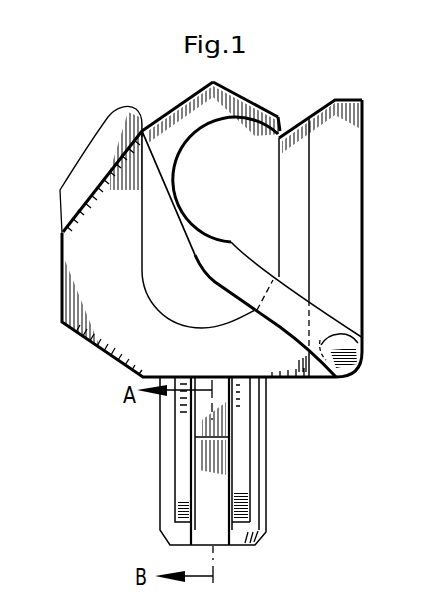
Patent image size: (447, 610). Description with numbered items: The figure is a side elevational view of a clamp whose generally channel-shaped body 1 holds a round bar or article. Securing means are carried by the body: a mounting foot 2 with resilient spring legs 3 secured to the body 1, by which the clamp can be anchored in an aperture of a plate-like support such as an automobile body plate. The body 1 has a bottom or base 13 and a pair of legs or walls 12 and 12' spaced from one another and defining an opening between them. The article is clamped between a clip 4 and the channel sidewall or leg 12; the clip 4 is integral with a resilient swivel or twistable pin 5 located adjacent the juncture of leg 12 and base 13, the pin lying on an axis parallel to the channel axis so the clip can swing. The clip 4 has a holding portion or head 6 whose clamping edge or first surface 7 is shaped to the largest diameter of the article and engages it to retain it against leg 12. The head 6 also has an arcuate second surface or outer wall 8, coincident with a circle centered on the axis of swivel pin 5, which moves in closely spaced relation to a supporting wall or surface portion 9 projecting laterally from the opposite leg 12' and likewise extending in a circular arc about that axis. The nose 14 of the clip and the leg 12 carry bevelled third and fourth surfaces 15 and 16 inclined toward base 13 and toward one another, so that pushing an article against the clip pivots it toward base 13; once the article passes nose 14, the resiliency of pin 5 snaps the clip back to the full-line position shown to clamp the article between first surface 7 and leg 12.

The channel-shaped body 1 is at (320, 410).
The mounting foot 2 is at (293, 495).
The resilient spring legs 3 is at (205, 465).
The clip 4 is at (300, 298).
The swivel pin 5 is at (357, 343).
The head 6 is at (210, 145).
The first surface 7 is at (220, 172).
The second surface 8 is at (178, 106).
The supporting wall 9 is at (93, 172).
The leg 12 is at (346, 248).
The opposite leg 12' is at (61, 302).
The base 13 is at (193, 325).
The nose 14 is at (253, 118).
The third surface 15 is at (250, 100).
The fourth surface 16 is at (317, 110).